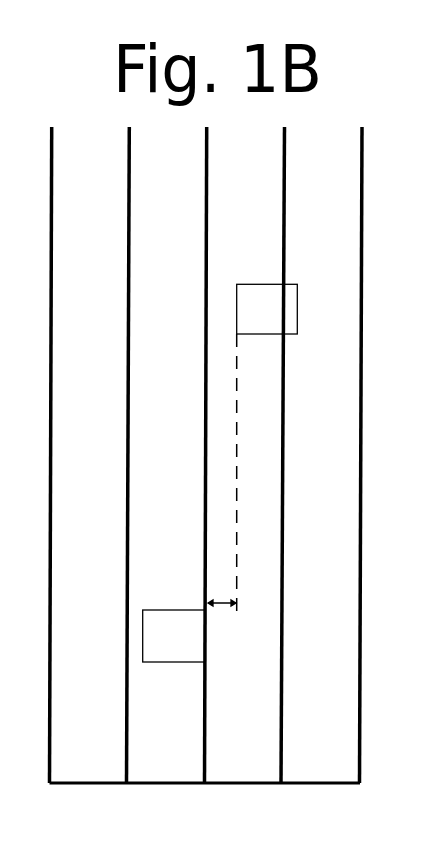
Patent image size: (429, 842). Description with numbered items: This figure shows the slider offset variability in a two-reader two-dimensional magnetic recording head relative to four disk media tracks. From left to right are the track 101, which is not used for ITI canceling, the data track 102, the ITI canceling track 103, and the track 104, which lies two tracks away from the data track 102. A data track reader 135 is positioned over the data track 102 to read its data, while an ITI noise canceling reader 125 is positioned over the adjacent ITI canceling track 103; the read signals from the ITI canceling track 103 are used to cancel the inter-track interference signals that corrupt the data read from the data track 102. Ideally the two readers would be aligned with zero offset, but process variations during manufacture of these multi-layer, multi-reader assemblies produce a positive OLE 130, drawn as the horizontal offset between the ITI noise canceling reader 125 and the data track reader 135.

The track 101 is at (87, 455).
The data track 102 is at (157, 455).
The ITI canceling track 103 is at (243, 455).
The track 104 is at (321, 455).
The ITI noise canceling reader 125 is at (267, 448).
The positive OLE 130 is at (218, 605).
The data track reader 135 is at (174, 636).